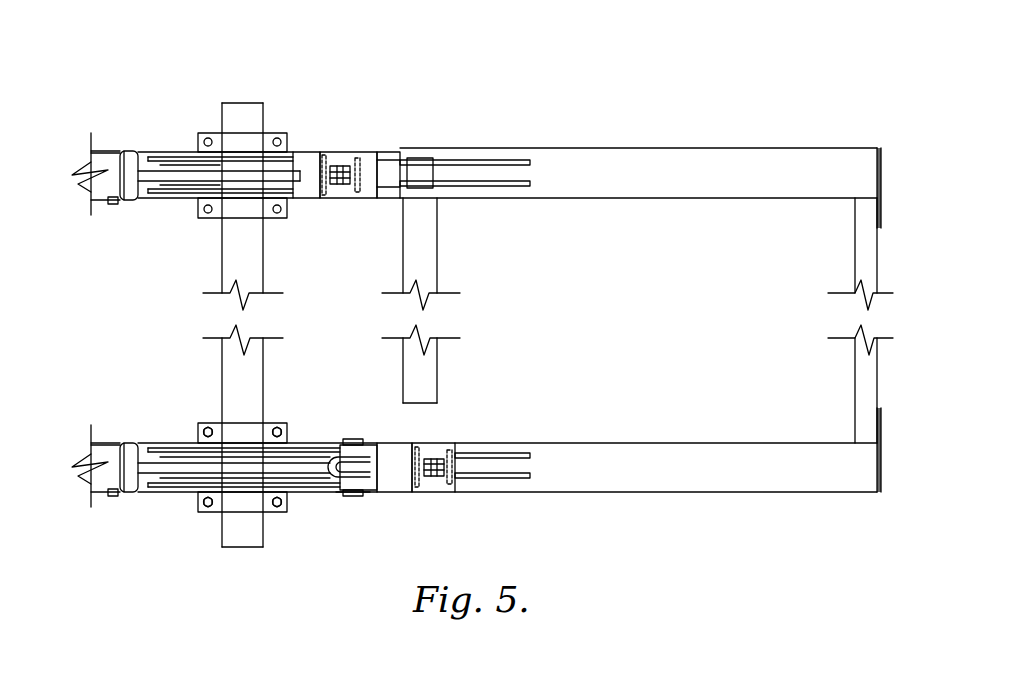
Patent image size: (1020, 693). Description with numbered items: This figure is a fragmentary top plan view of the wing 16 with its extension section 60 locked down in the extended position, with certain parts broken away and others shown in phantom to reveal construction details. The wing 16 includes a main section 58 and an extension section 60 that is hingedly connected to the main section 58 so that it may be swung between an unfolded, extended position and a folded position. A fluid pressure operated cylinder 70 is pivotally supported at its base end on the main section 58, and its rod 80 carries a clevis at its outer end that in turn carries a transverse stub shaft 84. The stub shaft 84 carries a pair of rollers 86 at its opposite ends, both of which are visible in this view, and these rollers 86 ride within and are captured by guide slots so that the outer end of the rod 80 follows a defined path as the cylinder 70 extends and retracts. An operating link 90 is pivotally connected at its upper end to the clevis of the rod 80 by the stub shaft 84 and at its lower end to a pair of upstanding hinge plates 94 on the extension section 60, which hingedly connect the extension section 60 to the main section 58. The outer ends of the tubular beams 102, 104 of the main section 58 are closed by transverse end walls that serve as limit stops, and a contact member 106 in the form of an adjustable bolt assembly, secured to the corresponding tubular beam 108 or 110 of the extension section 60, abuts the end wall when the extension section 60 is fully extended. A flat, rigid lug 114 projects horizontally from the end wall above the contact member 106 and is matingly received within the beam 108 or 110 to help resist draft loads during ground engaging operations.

The wing 16 is at (108, 137).
The main section 58 is at (172, 150).
The extension section 60 is at (680, 148).
The fluid pressure operated cylinder 70 is at (103, 185).
The rod 80 is at (176, 178).
The stub shaft 84 is at (345, 494).
The rollers 86 is at (346, 440).
The operating link 90 is at (392, 170).
The hinge plates 94 is at (500, 163).
The tubular beam 102 is at (398, 486).
The tubular beam 104 is at (305, 165).
The contact member 106 is at (328, 192).
The tubular beam 108 is at (780, 450).
The tubular beam 110 is at (790, 150).
The lug 114 is at (338, 160).